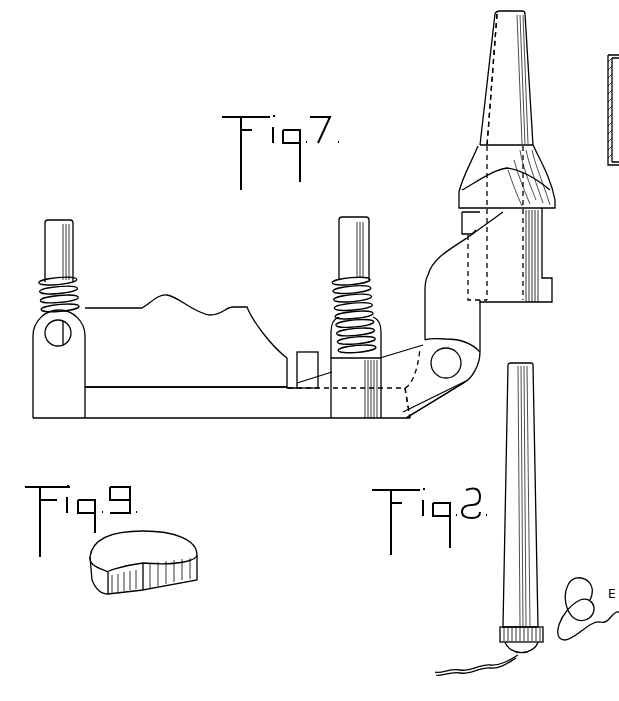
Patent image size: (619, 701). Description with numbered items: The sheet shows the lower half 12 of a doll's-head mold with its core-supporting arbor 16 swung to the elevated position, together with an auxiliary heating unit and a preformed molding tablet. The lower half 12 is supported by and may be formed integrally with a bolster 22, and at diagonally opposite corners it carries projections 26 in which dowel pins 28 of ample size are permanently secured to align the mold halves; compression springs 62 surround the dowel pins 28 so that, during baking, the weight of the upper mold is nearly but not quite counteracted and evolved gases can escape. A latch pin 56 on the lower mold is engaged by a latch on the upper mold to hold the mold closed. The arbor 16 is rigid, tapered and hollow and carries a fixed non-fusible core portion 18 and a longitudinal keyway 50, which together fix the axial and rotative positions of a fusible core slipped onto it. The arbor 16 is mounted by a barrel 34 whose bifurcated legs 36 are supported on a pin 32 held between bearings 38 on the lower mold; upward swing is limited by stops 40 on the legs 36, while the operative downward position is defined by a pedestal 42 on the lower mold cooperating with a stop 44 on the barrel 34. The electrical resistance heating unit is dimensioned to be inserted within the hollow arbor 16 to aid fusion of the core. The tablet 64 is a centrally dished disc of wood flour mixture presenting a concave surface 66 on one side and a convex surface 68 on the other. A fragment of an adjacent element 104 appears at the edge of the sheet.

In FIG. 7, the lower half of the mold 12 is at (153, 368).
In FIG. 7, the core-supporting arbor 16 is at (510, 47).
In FIG. 7, the non-fusible core portion 18 is at (541, 177).
In FIG. 7, the bolster 22 is at (203, 410).
In FIG. 7, the projections 26 is at (346, 408).
In FIG. 7, the dowel pins 28 is at (348, 243).
In FIG. 7, the pin 32 is at (448, 371).
In FIG. 7, the barrel 34 is at (535, 240).
In FIG. 7, the legs 36 is at (462, 326).
In FIG. 7, the bearings 38 is at (427, 392).
In FIG. 7, the stops 40 is at (411, 420).
In FIG. 7, the pedestal 42 is at (305, 372).
In FIG. 7, the stop 44 is at (461, 222).
In FIG. 7, the longitudinal keyway 50 is at (528, 75).
In FIG. 7, the latch pins 56 is at (57, 345).
In FIG. 7, the compression springs 62 is at (368, 302).
In FIG. 9, the tablet 64 is at (198, 566).
In FIG. 9, the concave surface 66 is at (152, 550).
In FIG. 9, the convex surface 68 is at (152, 589).
In FIG. 7, the wall 104 is at (610, 117).